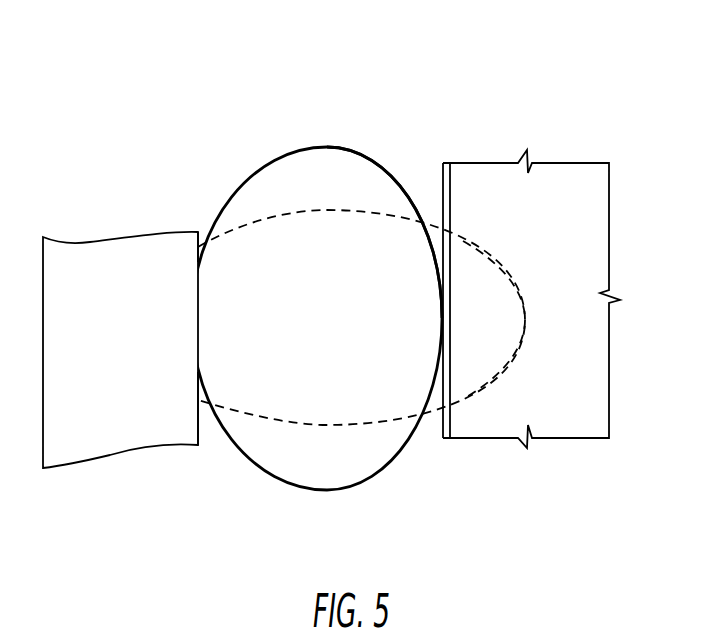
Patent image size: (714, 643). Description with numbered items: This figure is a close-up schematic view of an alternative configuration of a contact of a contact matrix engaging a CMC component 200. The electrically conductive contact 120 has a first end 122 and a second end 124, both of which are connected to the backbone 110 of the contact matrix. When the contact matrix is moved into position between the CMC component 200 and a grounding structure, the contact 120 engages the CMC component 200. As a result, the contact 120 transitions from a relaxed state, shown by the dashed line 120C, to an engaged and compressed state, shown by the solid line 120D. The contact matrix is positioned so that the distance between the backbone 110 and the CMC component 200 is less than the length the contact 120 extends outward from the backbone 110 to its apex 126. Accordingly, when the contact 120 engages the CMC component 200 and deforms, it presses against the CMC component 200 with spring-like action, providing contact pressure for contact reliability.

The backbone 110 is at (90, 243).
The contact 120 is at (287, 136).
The relaxed state of the contact 120C is at (335, 427).
The engaged and compressed state of the contact 120D is at (357, 150).
The first end 122 is at (205, 218).
The second end 124 is at (206, 439).
The apex 126 is at (527, 319).
The CMC component 200 is at (547, 226).